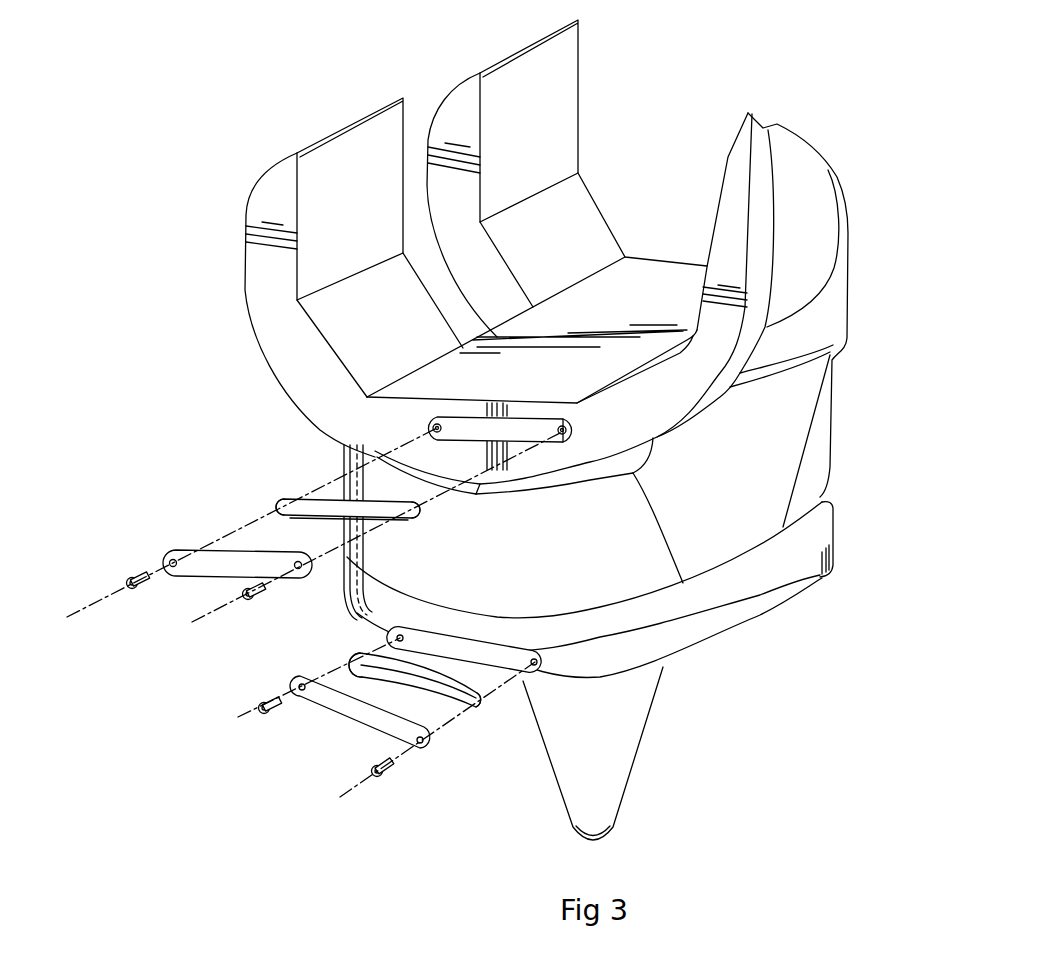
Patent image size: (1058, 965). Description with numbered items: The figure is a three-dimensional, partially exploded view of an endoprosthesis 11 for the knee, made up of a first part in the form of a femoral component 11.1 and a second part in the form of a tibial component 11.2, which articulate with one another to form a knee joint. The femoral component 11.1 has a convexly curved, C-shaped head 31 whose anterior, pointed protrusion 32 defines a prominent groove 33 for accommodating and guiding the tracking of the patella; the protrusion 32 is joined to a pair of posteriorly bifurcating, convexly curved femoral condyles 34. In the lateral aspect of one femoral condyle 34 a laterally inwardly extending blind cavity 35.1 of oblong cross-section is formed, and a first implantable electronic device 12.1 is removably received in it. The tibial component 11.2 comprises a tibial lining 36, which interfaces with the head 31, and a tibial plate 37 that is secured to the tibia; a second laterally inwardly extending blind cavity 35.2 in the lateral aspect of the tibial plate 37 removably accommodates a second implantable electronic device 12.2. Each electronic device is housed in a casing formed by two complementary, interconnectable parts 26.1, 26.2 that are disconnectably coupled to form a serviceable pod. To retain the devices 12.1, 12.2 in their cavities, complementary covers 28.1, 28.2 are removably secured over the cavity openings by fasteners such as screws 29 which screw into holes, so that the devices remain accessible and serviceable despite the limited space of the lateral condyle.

The endoprosthesis 11 is at (863, 135).
The femoral component 11.1 is at (861, 227).
The tibial component 11.2 is at (748, 521).
The first implantable electronic device 12.1 is at (249, 493).
The second implantable electronic device 12.2 is at (505, 702).
The first casing part 26.1 is at (418, 504).
The second casing part 26.2 is at (402, 522).
The first cover 28.1 is at (247, 578).
The second cover 28.2 is at (333, 706).
The screws 29 is at (247, 575).
The head 31 is at (417, 126).
The anterior pointed protrusion 32 is at (807, 170).
The groove 33 is at (809, 286).
The femoral condyles 34 is at (348, 153).
The first blind cavity 35.1 is at (439, 401).
The second blind cavity 35.2 is at (497, 636).
The tibial lining 36 is at (373, 453).
The tibial plate 37 is at (733, 610).